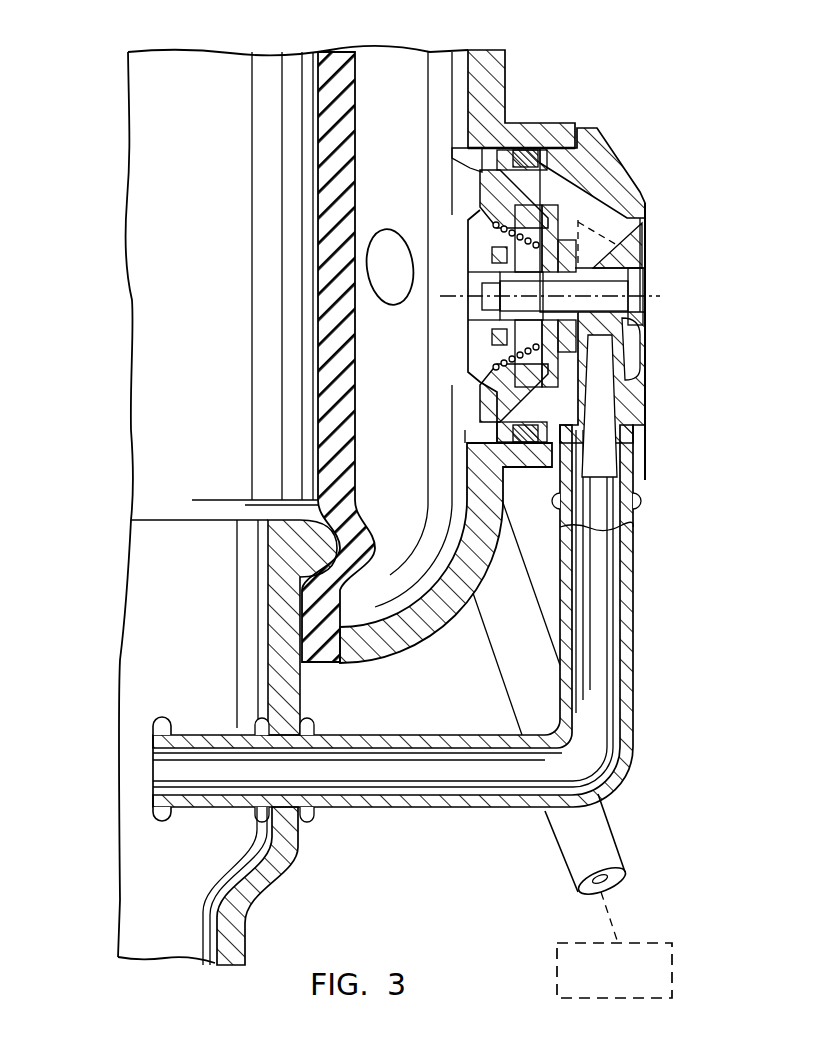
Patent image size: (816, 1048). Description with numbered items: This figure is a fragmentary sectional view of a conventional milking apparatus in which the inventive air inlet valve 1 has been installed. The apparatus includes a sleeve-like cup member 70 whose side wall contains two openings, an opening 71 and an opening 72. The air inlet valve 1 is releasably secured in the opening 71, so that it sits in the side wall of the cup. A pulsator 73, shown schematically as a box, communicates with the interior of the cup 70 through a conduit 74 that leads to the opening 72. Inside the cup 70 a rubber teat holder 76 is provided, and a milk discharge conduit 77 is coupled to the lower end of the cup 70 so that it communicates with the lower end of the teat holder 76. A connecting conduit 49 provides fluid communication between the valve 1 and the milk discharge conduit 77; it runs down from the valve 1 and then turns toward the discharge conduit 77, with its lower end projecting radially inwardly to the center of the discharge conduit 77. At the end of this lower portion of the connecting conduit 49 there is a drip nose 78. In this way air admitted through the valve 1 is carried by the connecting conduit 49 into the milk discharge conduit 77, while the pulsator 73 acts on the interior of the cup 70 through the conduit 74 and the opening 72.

The air inlet valve 1 is at (650, 176).
The connecting conduit 49 is at (627, 672).
The sleeve-like cup member 70 is at (488, 73).
The opening 71 is at (466, 431).
The opening 72 is at (400, 250).
The pulsator 73 is at (670, 943).
The conduit 74 is at (592, 830).
The rubber teat holder 76 is at (342, 72).
The milk discharge conduit 77 is at (292, 870).
The drip nose 78 is at (157, 816).